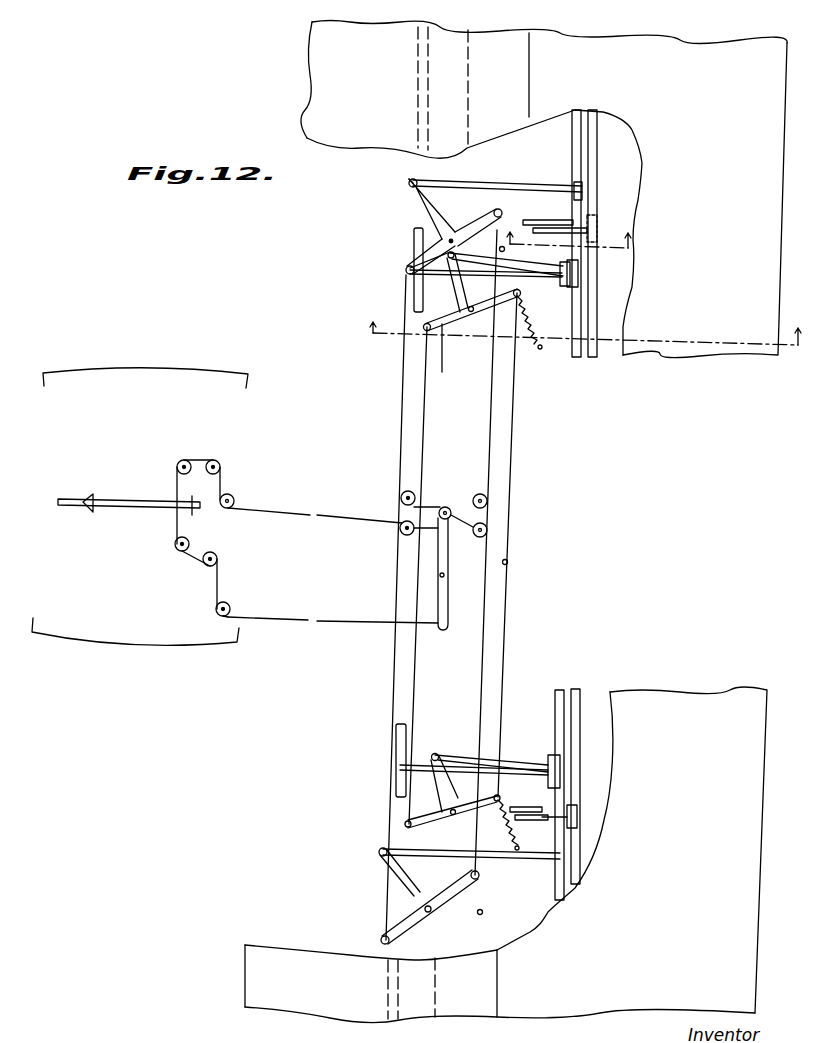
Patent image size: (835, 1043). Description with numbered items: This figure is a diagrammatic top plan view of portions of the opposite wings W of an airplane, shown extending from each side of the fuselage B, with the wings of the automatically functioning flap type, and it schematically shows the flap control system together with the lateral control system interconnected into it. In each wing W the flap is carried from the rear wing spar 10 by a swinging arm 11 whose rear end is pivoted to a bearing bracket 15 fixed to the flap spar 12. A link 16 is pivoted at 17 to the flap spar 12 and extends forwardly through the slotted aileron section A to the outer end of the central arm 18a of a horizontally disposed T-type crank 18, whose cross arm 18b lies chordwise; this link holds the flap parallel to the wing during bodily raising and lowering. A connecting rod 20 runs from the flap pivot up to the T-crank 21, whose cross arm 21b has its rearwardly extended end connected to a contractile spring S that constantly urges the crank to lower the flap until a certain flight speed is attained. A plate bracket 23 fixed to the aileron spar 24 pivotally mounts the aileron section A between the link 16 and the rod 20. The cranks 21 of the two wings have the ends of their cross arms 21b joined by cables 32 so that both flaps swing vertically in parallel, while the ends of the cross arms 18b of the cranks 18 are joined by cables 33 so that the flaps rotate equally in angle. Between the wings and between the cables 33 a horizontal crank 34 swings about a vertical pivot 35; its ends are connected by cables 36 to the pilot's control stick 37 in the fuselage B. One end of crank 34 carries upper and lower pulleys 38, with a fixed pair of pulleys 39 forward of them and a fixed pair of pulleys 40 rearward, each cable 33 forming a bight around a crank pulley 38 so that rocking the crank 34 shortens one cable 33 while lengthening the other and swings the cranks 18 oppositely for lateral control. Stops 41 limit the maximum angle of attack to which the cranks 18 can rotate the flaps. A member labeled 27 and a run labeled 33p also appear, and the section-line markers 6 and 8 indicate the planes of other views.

The wing W is at (360, 38).
The aileron section A is at (642, 528).
The fuselage B is at (155, 372).
The rear wing spar 10 is at (414, 238).
The arm 11 is at (530, 273).
The flap spar 12 is at (572, 324).
The bearing bracket 15 is at (548, 760).
The link 16 is at (507, 184).
The pivotal connection 17 is at (585, 190).
The crank 18 is at (447, 223).
The central arm 18a is at (413, 197).
The cross arm 18b is at (430, 930).
The connecting rod 20 is at (548, 264).
The T-crank 21 is at (467, 313).
The cross arm 21b is at (455, 358).
The plate bracket 23 is at (573, 222).
The aileron spar 24 is at (593, 282).
The bar 27 is at (540, 232).
The cables 32 is at (425, 430).
The cables 33 is at (493, 398).
The rod 33' 33p is at (405, 284).
The crank 34 is at (444, 598).
The vertical pivot 35 is at (445, 576).
The cables 36 is at (350, 520).
The control stick 37 is at (105, 500).
The crank pulleys 38 is at (452, 513).
The pulleys 39 is at (400, 525).
The pulleys 40 is at (488, 499).
The stops 41 is at (495, 912).
The spring S is at (541, 350).
The section line 6- 6 is at (569, 230).
The section line 8- 8 is at (583, 326).